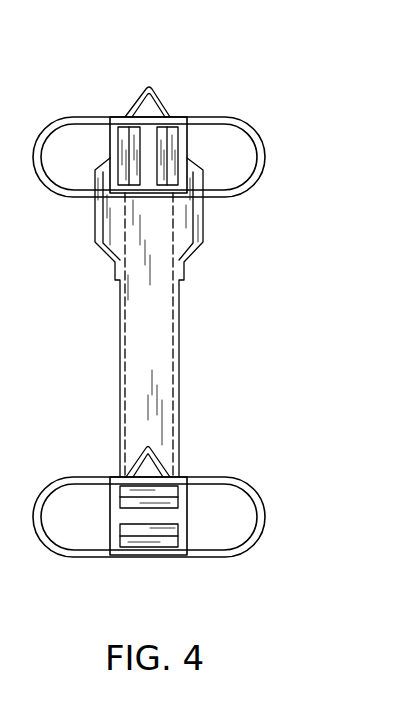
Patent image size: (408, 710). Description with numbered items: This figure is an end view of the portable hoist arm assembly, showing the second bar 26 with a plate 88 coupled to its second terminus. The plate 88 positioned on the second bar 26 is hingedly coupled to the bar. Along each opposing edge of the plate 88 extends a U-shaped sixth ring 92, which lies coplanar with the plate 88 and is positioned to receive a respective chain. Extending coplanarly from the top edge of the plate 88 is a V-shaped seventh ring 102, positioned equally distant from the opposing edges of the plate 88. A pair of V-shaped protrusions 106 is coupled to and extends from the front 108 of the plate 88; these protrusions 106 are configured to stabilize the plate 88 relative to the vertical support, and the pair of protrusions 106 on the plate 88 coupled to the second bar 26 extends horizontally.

The second bar 26 is at (138, 349).
The plate 88 is at (192, 142).
The sixth ring 92 is at (83, 482).
The seventh ring 102 is at (145, 86).
The protrusion 106 is at (128, 172).
The front 108 is at (150, 130).